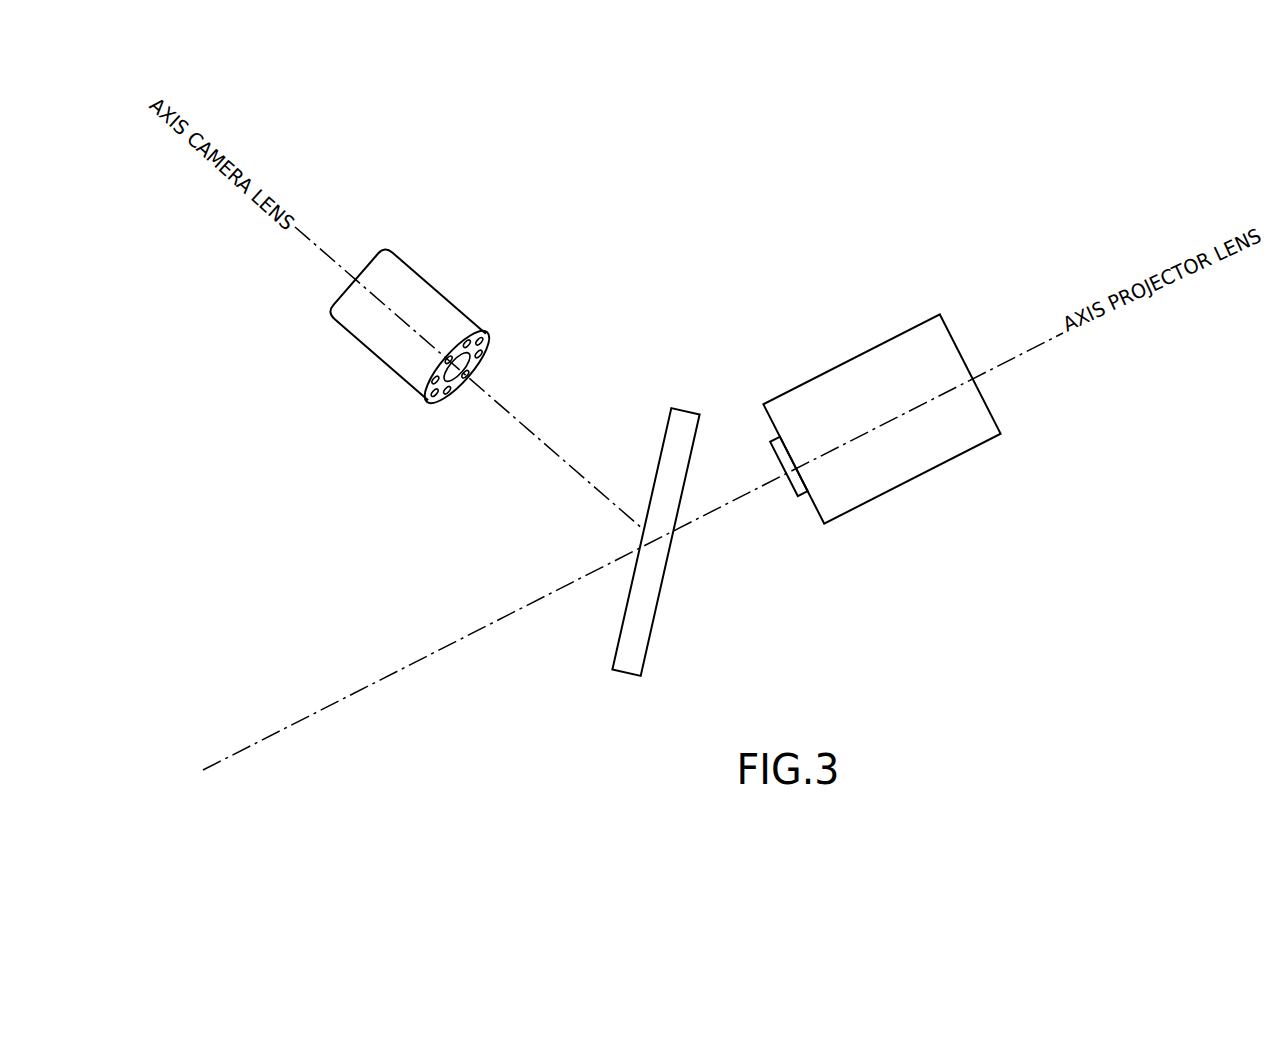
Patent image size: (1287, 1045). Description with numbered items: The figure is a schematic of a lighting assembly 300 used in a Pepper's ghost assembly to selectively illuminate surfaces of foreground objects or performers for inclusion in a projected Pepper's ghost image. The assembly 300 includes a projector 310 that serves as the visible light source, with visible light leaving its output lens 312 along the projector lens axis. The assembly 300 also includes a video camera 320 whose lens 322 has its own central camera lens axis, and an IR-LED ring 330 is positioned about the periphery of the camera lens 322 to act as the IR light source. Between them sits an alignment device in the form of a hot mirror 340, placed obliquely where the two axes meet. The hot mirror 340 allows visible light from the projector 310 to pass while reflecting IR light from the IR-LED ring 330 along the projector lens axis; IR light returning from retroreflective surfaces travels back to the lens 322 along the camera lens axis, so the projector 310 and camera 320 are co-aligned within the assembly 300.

The lighting assembly 300 is at (968, 188).
The projector 310 is at (863, 352).
The output lens 312 is at (799, 497).
The video camera 320 is at (354, 342).
The camera lens 322 is at (430, 405).
The IR-LED ring 330 is at (492, 353).
The hot mirror 340 is at (620, 672).